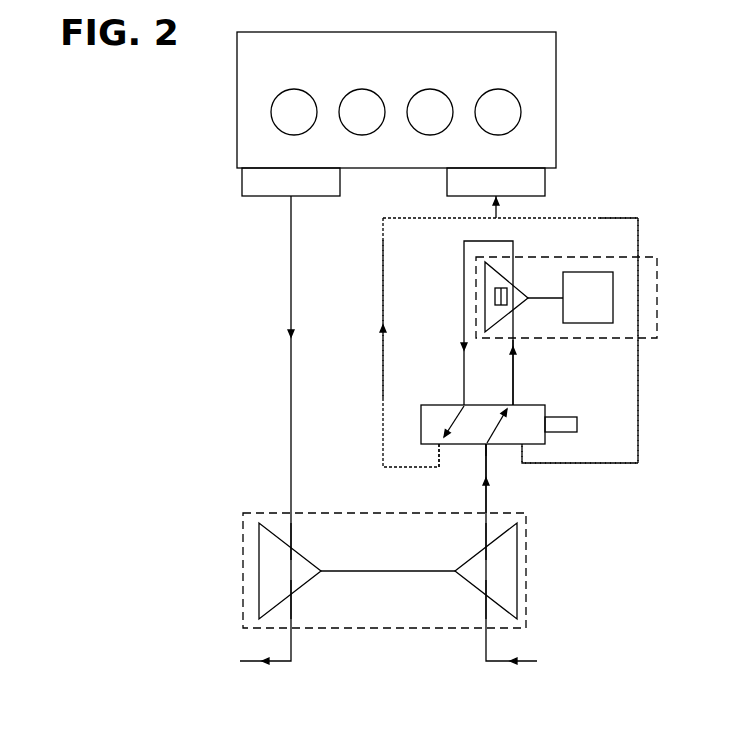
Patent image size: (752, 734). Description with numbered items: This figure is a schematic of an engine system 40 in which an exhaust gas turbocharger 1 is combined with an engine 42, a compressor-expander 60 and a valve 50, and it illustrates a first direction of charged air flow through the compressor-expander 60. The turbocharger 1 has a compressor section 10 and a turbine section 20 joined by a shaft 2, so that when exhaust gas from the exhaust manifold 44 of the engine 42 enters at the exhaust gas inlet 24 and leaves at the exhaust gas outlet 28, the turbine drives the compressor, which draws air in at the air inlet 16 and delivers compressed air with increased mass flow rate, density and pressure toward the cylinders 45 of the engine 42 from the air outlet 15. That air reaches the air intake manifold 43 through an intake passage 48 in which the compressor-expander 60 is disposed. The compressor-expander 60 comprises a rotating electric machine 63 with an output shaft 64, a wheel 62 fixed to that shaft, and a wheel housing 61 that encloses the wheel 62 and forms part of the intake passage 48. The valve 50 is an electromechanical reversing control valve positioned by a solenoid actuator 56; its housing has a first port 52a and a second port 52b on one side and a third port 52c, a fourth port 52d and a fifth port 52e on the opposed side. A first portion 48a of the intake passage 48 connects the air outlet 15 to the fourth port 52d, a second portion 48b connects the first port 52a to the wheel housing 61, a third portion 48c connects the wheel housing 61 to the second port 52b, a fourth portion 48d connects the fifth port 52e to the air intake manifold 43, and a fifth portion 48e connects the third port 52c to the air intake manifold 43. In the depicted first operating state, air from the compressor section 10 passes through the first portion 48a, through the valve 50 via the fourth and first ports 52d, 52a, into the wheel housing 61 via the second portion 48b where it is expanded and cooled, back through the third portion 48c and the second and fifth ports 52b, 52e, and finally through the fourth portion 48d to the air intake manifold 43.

The exhaust gas turbocharger 1 is at (242, 523).
The shaft 2 is at (392, 570).
The compressor section 10 is at (467, 573).
The air outlet 15 is at (485, 545).
The air inlet 16 is at (485, 597).
The turbine section 20 is at (295, 562).
The exhaust gas inlet 24 is at (290, 545).
The exhaust gas outlet 28 is at (290, 595).
The engine system 40 is at (210, 167).
The engine 42 is at (542, 122).
The air intake manifold 43 is at (547, 184).
The exhaust manifold 44 is at (250, 180).
The cylinders 45 is at (362, 88).
The intake passage 48 is at (382, 247).
The first portion of the intake passage 48a is at (487, 467).
The second portion of the intake passage 48b is at (513, 360).
The third portion of the intake passage 48c is at (485, 240).
The fourth portion of the intake passage 48d is at (382, 305).
The fifth portion of the intake passage 48e is at (638, 400).
The valve 50 is at (533, 412).
The first port 52a is at (513, 403).
The second port 52b is at (464, 405).
The third port 52c is at (522, 438).
The fourth port 52d is at (487, 447).
The fifth port 52e is at (440, 444).
The solenoid actuator 56 is at (568, 418).
The compressor-expander 60 is at (647, 257).
The wheel housing 61 is at (490, 279).
The wheel 62 is at (503, 288).
The rotating electric machine 63 is at (587, 272).
The output shaft 64 is at (548, 298).